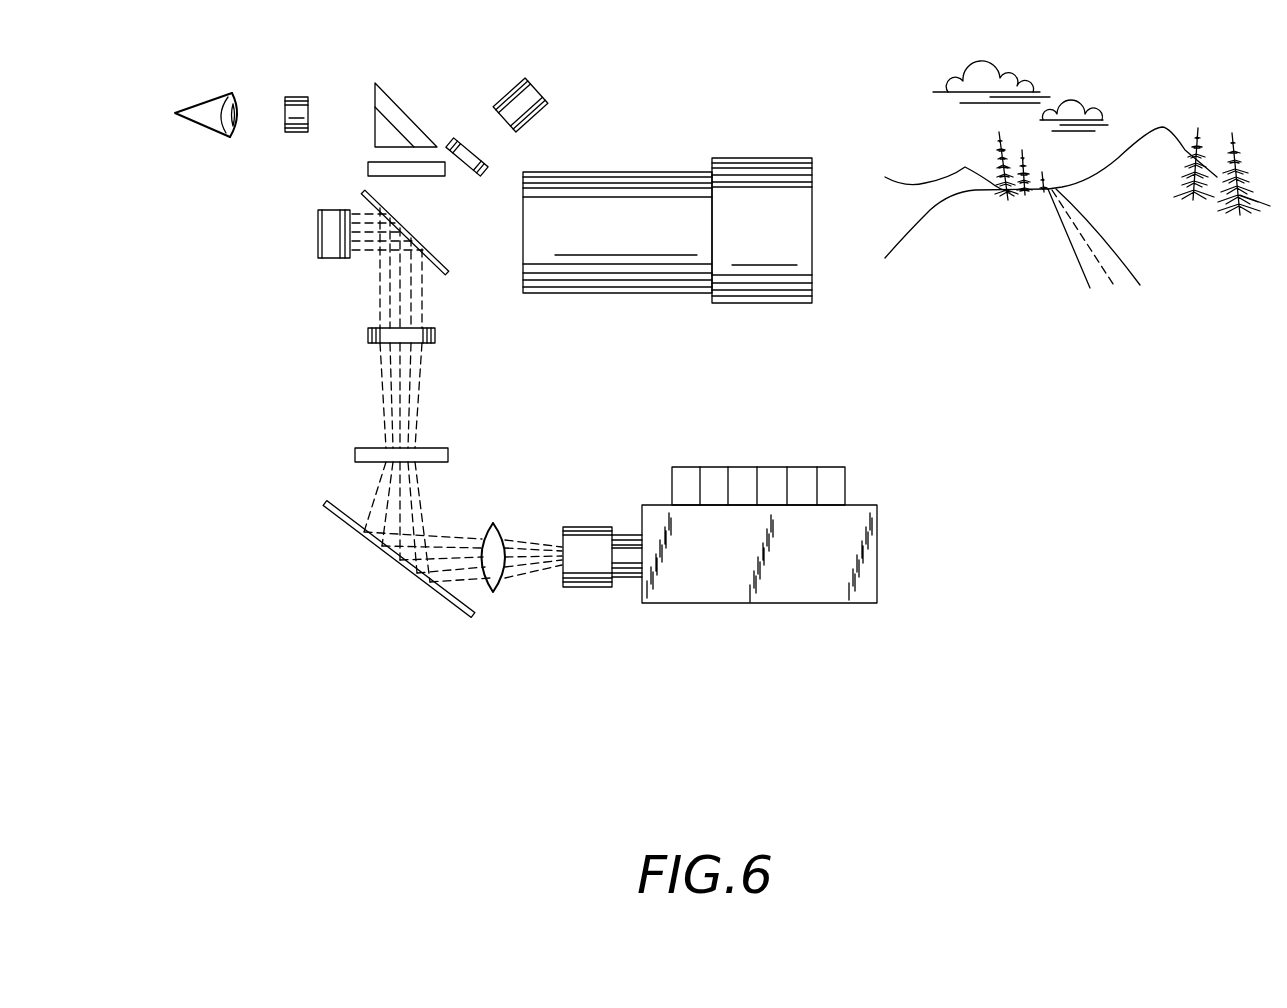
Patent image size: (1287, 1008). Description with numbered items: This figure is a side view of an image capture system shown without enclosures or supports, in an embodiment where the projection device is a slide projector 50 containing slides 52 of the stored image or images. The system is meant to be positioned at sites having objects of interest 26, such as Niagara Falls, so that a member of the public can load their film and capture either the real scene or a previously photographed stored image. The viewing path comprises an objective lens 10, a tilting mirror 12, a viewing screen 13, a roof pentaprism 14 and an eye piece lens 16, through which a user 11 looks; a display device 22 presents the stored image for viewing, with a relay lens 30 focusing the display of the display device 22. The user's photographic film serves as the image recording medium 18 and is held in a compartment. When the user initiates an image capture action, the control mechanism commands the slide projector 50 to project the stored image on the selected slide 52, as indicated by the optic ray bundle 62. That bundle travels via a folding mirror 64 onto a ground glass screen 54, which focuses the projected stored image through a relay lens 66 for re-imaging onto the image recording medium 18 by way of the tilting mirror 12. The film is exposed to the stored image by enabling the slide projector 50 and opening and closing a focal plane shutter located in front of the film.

The objective lens 10 is at (627, 294).
The user 11 is at (190, 90).
The tilting mirror 12 is at (408, 240).
The viewing screen 13 is at (368, 167).
The roof pentaprism 14 is at (391, 94).
The eye piece lens 16 is at (292, 95).
The image recording medium 18 is at (318, 255).
The display device 22 is at (548, 95).
The objects of interest 26 is at (1013, 285).
The relay lens 30 is at (455, 140).
The slide projector 50 is at (877, 505).
The slides 52 is at (757, 467).
The ground glass screen 54 is at (355, 450).
The optic ray bundle 62 is at (497, 523).
The folding mirror 64 is at (365, 532).
The relay lens 66 is at (368, 338).